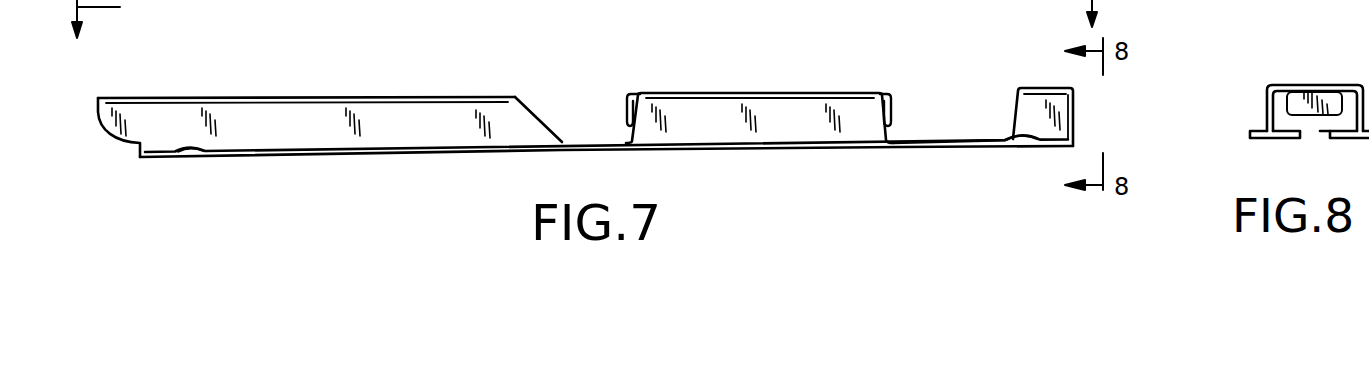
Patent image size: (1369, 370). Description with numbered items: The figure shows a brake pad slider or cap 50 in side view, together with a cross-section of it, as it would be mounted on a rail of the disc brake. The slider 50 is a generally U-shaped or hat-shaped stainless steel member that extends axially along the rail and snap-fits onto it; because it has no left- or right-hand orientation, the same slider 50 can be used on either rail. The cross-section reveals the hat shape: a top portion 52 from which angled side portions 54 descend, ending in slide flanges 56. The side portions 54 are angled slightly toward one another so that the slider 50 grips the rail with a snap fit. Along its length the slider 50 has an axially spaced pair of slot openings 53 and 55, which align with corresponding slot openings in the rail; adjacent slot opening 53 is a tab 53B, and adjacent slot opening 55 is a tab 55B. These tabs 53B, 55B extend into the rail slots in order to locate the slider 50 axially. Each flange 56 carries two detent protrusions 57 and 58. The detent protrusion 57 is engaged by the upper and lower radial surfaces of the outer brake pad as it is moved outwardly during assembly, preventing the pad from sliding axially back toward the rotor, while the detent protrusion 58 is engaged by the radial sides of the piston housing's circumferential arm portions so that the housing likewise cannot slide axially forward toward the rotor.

In FIG. 7, the brake pad slider 50 is at (438, 91).
In FIG. 8, the brake pad slider 50 is at (1268, 87).
In FIG. 7, the top portion 52 is at (756, 93).
In FIG. 8, the top portion 52 is at (1318, 92).
In FIG. 7, the slot opening 53 is at (521, 98).
In FIG. 7, the tab 53B is at (628, 101).
In FIG. 7, the angled side portions 54 is at (408, 134).
In FIG. 7, the slot opening 55 is at (944, 141).
In FIG. 8, the slot opening 55 is at (1315, 116).
In FIG. 7, the tab 55B is at (889, 106).
In FIG. 7, the slide flanges 56 is at (485, 152).
In FIG. 8, the slide flanges 56 is at (1280, 140).
In FIG. 7, the detent protrusion 57 is at (1022, 143).
In FIG. 8, the detent protrusion 57 is at (1251, 134).
In FIG. 7, the detent protrusion 58 is at (190, 156).